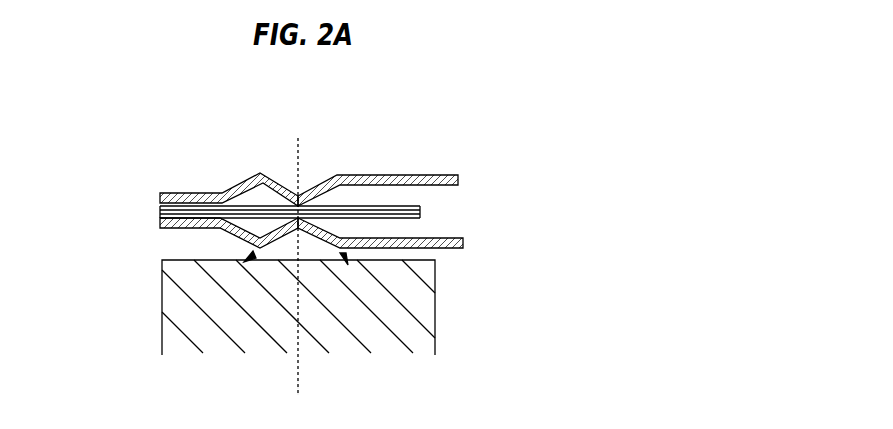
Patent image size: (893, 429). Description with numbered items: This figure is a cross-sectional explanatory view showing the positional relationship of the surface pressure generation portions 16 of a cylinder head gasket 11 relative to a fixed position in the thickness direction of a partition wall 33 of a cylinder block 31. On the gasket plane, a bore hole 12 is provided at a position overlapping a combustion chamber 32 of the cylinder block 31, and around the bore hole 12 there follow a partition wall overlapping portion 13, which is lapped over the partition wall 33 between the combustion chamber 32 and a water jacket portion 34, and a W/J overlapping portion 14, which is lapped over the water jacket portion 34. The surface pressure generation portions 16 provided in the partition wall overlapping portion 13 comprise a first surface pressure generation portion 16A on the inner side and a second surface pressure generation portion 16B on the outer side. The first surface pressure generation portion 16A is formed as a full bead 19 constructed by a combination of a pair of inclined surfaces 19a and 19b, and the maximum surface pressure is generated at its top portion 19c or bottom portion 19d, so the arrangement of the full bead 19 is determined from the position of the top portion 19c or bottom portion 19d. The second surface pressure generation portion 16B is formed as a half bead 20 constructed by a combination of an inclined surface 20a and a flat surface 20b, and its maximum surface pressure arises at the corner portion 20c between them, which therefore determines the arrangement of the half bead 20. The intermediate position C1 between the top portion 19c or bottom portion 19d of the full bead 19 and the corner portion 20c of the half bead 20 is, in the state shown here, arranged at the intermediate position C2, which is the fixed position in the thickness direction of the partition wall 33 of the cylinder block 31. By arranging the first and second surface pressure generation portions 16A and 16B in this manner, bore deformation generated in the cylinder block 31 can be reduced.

The cylinder head gasket 11 is at (437, 181).
The bore hole 12 is at (78, 227).
The partition wall overlapping portion 13 is at (362, 205).
The W/J overlapping portion 14 is at (436, 233).
The surface pressure generation portion 16 is at (297, 313).
The first surface pressure generation portion 16A is at (162, 328).
The second surface pressure generation portion 16B is at (437, 340).
The full bead 19 is at (185, 167).
The inclined surface 19a is at (190, 176).
The inclined surface 19b is at (246, 145).
The top portion 19c is at (213, 156).
The bottom portion 19d is at (213, 192).
The half bead 20 is at (437, 162).
The inclined surface 20a is at (380, 146).
The flat surface 20b is at (483, 152).
The corner portion 20c is at (435, 150).
The cylinder block 31 is at (366, 307).
The combustion chamber 32 is at (78, 288).
The partition wall 33 is at (250, 328).
The water jacket portion 34 is at (562, 326).
The intermediate position C1 is at (319, 267).
The intermediate position C2 is at (321, 384).